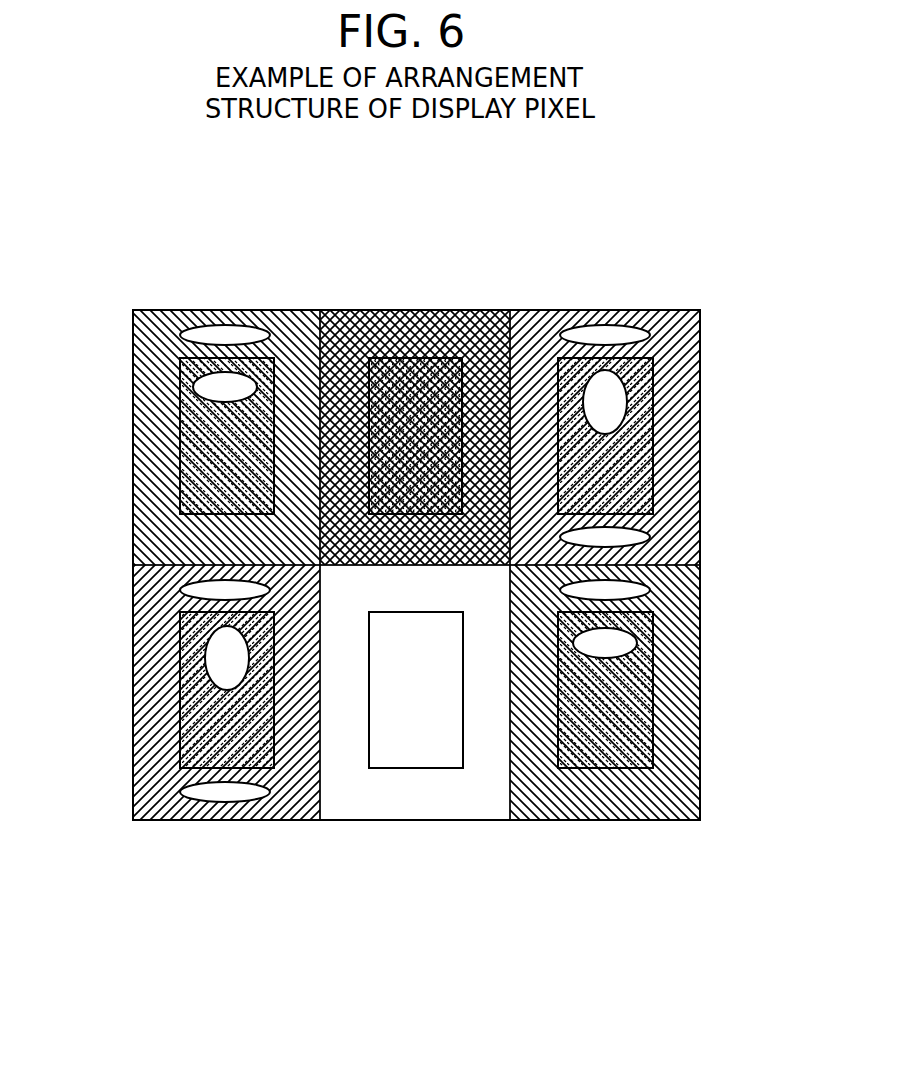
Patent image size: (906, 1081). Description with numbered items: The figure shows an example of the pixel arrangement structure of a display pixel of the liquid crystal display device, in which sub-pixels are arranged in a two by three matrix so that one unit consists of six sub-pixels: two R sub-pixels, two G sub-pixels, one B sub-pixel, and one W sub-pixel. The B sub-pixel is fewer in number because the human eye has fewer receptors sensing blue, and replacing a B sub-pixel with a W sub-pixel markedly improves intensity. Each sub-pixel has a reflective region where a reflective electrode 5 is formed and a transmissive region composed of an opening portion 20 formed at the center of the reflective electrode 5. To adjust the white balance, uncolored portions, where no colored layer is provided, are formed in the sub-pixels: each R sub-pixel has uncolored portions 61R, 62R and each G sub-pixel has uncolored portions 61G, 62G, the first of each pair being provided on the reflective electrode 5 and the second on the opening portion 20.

The reflective electrode 5 is at (353, 820).
The opening portion 20 is at (447, 757).
The uncolored portion 61G is at (190, 581).
The uncolored portion 62G is at (206, 643).
The uncolored portion 61R is at (645, 598).
The uncolored portion 62R is at (638, 662).